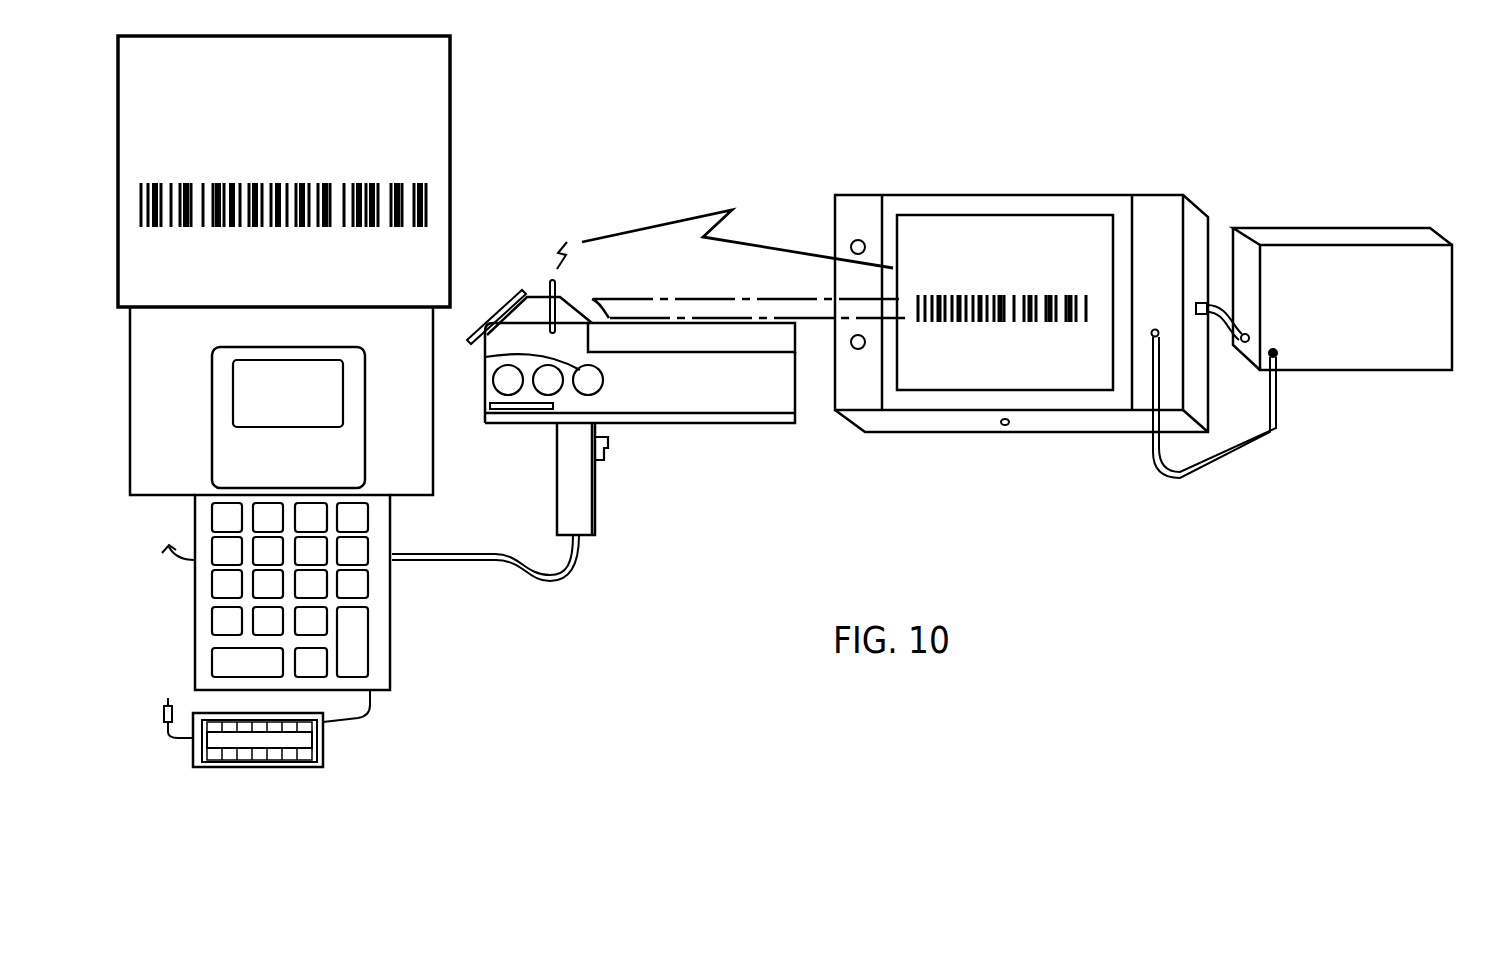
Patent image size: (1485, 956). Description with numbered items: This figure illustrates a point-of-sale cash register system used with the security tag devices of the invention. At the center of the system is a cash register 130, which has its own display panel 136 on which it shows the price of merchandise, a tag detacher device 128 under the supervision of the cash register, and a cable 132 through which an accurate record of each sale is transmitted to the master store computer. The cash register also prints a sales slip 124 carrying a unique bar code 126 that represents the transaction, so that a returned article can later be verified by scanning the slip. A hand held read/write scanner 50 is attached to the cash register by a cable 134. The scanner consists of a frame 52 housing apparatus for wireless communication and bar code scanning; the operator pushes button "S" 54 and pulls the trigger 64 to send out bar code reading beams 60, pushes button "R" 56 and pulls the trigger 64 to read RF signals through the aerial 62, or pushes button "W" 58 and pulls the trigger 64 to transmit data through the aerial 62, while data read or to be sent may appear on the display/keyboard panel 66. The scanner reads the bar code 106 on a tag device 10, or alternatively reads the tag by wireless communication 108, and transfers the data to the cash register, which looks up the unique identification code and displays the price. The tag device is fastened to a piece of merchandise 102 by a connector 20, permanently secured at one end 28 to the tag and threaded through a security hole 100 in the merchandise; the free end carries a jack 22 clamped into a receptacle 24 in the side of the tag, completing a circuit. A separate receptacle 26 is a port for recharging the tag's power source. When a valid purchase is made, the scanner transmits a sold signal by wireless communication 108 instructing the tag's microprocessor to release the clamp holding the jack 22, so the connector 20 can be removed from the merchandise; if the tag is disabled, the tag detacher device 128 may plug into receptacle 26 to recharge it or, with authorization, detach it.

The tag device 10 is at (973, 193).
The connector 20 is at (1244, 453).
The jack 22 is at (1195, 318).
The receptacle 24 is at (1196, 306).
The receptacle 26 is at (1002, 433).
The end 28 is at (1151, 336).
The read/write scanner 50 is at (716, 352).
The frame 52 is at (752, 402).
The button "S" 54 is at (493, 379).
The button "R" 56 is at (490, 406).
The button "W" 58 is at (485, 357).
The bar code reading beams 60 is at (813, 311).
The aerial 62 is at (549, 285).
The trigger 64 is at (610, 447).
The display/keyboard panel 66 is at (500, 313).
The security hole 100 is at (1278, 350).
The merchandise 102 is at (1332, 227).
The bar code 106 is at (919, 320).
The wireless communication 108 is at (670, 220).
The sales slip 124 is at (423, 78).
The bar code 126 is at (428, 204).
The tag detacher device 128 is at (323, 765).
The cash register 130 is at (390, 688).
The cable 132 is at (176, 574).
The cable 134 is at (477, 563).
The display panel 136 is at (253, 377).